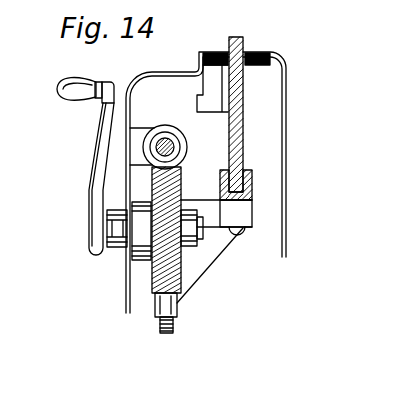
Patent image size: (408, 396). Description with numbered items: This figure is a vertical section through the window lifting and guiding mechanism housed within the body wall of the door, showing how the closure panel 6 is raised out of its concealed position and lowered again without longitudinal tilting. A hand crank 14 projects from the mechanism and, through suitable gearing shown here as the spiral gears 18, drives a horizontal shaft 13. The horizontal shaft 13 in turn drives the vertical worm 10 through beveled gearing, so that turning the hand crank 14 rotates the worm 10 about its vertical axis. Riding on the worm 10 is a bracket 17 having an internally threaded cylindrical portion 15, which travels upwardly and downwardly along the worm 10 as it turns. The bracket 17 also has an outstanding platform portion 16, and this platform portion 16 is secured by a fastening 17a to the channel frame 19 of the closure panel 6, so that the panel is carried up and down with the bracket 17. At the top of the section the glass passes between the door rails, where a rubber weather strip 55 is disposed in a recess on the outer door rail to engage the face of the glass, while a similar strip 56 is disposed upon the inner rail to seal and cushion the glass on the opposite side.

The closure panel 6 is at (244, 118).
The vertical worm 10 is at (168, 324).
The horizontal shaft 13 is at (167, 145).
The hand crank 14 is at (89, 184).
The internally threaded cylindrical portion 15 is at (156, 308).
The platform portion 16 is at (242, 217).
The bracket 17 is at (195, 274).
The fastening 17a is at (236, 231).
The spiral gear 18 is at (153, 279).
The channel frame 19 is at (252, 186).
The rubber weather strip 55 is at (266, 38).
The weather strip 56 is at (226, 50).